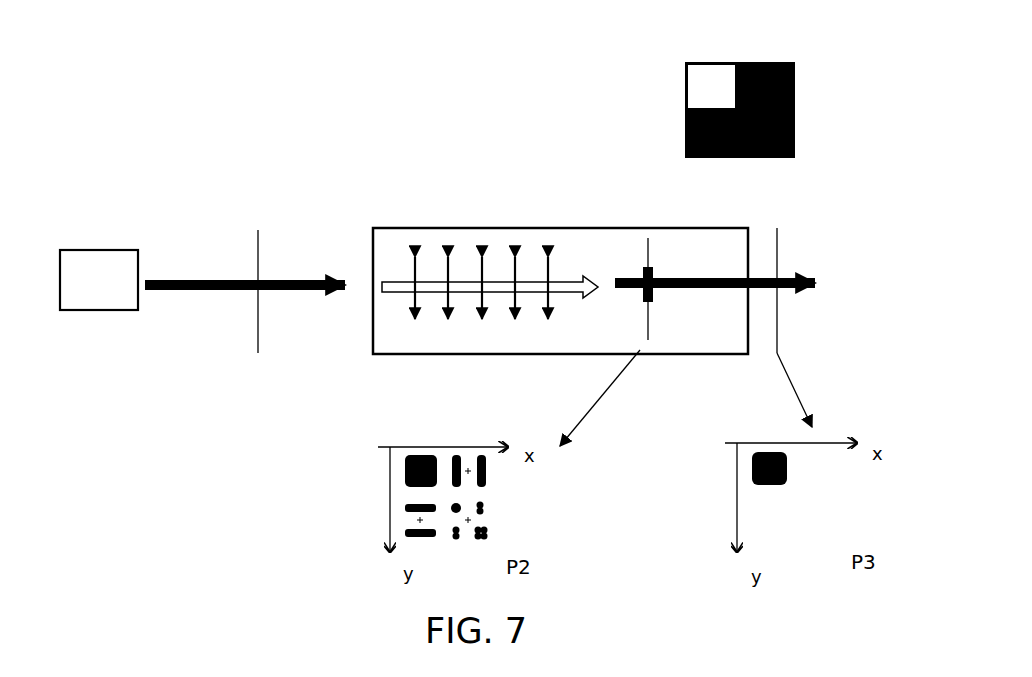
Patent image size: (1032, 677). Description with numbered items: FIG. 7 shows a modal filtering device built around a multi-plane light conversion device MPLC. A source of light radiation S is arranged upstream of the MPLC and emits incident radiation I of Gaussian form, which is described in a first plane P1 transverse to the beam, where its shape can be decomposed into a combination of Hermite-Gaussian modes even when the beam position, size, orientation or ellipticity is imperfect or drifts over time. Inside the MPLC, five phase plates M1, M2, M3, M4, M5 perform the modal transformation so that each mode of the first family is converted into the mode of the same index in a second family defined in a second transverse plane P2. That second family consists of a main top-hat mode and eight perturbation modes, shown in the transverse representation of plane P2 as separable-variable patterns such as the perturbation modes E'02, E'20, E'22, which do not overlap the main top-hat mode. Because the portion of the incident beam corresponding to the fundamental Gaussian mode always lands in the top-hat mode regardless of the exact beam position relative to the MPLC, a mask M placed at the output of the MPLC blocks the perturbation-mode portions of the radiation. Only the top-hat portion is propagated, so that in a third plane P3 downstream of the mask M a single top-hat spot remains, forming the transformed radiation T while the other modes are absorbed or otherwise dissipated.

The source of light radiation S is at (99, 280).
The incident radiation I is at (245, 268).
The first plane P1 is at (267, 278).
The MPLC conversion device MPLC is at (560, 277).
The phase plate M1 is at (413, 306).
The phase plate M2 is at (448, 307).
The phase plate M3 is at (482, 306).
The phase plate M4 is at (515, 307).
The phase plate M5 is at (550, 306).
The second transverse plane P2 is at (621, 342).
The mask M is at (650, 266).
The third plane P3 is at (794, 315).
The transformed radiation T is at (716, 306).
The perturbation mode E'02 is at (508, 451).
The perturbation mode E'20 is at (420, 520).
The perturbation mode E'22 is at (511, 527).